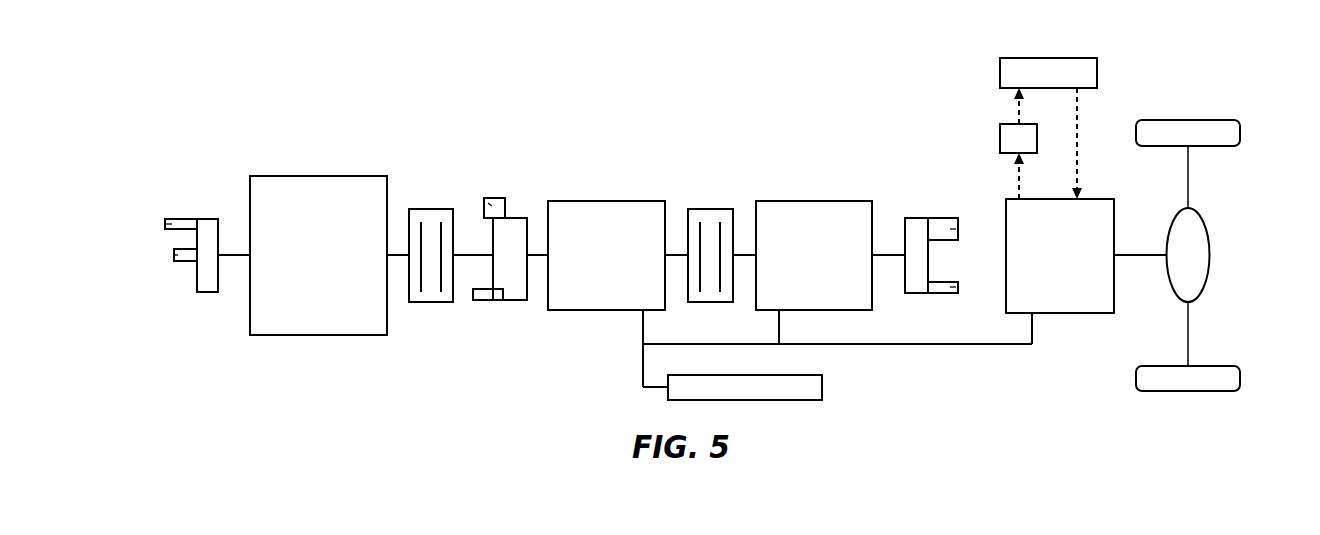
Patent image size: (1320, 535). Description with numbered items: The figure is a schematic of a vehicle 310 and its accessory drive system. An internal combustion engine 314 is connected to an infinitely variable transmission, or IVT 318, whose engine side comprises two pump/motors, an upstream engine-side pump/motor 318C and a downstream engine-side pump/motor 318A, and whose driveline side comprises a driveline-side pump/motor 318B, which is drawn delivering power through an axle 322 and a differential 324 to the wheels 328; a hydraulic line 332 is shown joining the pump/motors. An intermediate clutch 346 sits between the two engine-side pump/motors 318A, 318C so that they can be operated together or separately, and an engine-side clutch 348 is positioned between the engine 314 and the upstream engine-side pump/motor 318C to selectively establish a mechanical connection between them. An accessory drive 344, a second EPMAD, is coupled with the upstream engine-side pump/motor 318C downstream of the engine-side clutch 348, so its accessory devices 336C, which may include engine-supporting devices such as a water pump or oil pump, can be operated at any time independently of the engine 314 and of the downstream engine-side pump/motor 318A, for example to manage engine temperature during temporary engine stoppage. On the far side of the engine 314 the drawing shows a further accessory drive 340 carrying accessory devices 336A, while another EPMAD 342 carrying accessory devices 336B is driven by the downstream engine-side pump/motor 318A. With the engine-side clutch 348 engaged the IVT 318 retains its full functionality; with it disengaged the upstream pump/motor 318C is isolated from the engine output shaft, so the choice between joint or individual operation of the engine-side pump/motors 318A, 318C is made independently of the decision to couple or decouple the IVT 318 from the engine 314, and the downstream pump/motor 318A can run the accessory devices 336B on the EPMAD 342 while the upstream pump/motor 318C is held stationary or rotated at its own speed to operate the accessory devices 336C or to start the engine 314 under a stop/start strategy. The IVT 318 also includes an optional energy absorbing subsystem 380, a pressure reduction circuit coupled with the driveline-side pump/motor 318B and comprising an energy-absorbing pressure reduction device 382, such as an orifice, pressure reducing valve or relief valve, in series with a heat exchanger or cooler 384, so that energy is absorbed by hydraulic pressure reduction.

The vehicle 310 is at (243, 144).
The internal combustion engine 314 is at (287, 322).
The IVT 318 is at (570, 342).
The downstream engine-side pump/motor 318A is at (790, 203).
The driveline-side pump/motor 318B is at (1082, 315).
The upstream engine-side pump/motor 318C is at (608, 206).
The axle 322 is at (1190, 176).
The differential 324 is at (1197, 243).
The wheels 328 is at (1235, 129).
The hydraulic line 332 is at (820, 385).
The first clutch 336A is at (165, 223).
The accessory devices 336B is at (958, 287).
The accessory devices 336C is at (483, 289).
The first coupling device 340 is at (203, 310).
The EPMAD 342 is at (895, 190).
The accessory drive 344 is at (535, 186).
The intermediate clutch 346 is at (711, 215).
The engine-side clutch 348 is at (432, 209).
The energy absorbing subsystem 380 is at (984, 46).
The pressure reduction device 382 is at (1003, 133).
The heat exchanger 384 is at (1087, 72).